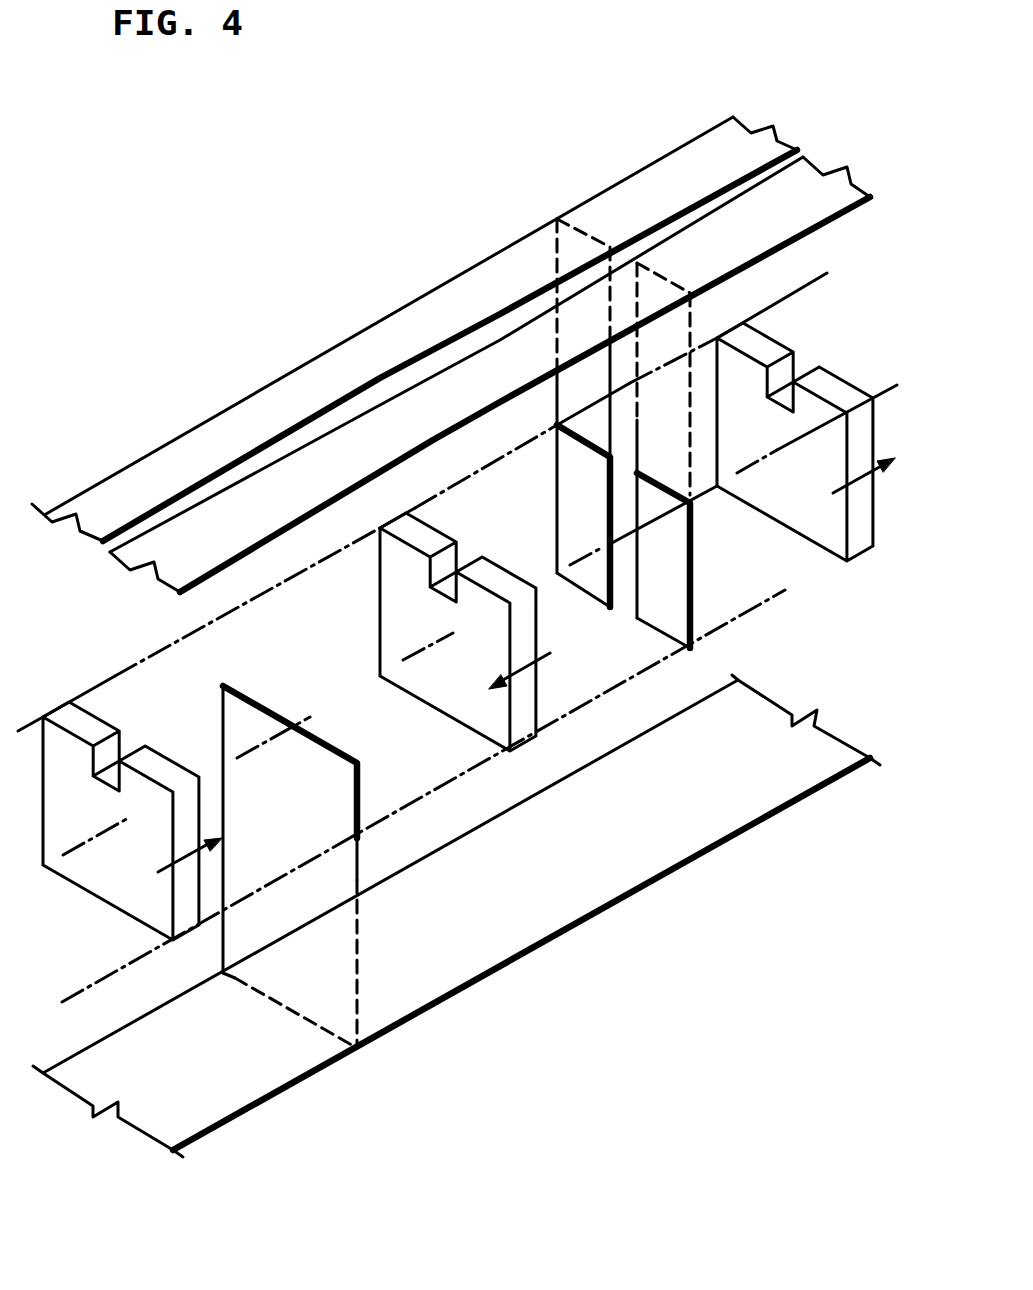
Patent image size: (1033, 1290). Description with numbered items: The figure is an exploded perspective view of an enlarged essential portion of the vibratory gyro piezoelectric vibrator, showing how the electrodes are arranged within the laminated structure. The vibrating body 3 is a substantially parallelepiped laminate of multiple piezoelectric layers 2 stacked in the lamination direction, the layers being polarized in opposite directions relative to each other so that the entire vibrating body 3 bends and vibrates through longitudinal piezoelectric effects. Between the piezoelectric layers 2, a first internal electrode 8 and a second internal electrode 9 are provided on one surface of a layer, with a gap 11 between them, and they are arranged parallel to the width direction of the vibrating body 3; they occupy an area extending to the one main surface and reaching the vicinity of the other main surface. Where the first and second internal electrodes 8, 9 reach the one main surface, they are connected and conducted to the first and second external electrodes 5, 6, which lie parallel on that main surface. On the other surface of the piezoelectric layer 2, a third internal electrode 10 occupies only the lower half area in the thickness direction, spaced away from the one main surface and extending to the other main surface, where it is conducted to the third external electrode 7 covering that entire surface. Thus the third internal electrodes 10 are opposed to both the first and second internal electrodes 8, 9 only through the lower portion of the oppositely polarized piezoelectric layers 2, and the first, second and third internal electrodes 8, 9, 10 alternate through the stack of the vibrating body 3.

The piezoelectric layer 2 is at (138, 879).
The vibrating body 3 is at (127, 667).
The first external electrode 5 is at (320, 390).
The second external electrode 6 is at (492, 367).
The third external electrode 7 is at (483, 942).
The first internal electrode 8 is at (573, 497).
The second internal electrode 9 is at (645, 596).
The third internal electrode 10 is at (315, 777).
The gap 11 is at (536, 650).